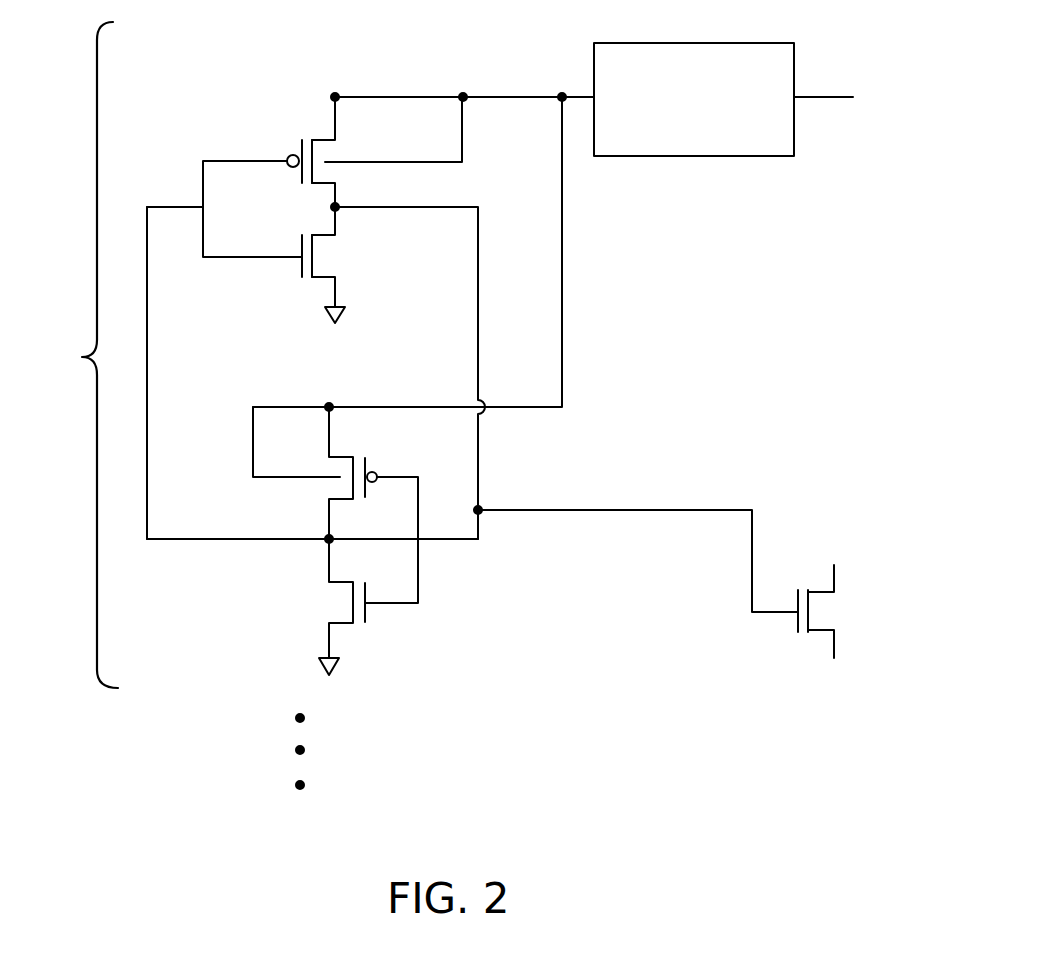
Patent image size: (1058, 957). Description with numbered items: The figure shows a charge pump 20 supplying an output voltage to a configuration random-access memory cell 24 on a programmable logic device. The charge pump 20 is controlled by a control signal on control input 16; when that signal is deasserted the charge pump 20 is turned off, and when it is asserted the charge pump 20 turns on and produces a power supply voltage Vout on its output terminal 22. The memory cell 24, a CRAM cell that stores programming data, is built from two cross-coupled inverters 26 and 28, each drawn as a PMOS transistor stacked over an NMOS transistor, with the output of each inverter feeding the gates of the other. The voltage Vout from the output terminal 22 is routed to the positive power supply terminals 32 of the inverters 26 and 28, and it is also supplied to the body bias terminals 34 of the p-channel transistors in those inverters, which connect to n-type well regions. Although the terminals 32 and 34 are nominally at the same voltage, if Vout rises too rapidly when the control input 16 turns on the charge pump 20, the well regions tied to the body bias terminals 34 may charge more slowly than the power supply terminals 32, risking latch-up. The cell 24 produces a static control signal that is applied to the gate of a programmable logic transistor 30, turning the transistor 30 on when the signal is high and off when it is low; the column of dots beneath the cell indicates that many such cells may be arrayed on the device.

The control input 16 is at (825, 97).
The charge pump 20 is at (687, 43).
The output terminal 22 is at (578, 99).
The random-access memory cell 24 is at (82, 355).
The inverter 26 is at (280, 139).
The inverter 28 is at (448, 578).
The programmable logic transistor 30 is at (774, 645).
The positive power supply terminals 32 is at (336, 95).
The body bias terminals 34 is at (353, 160).